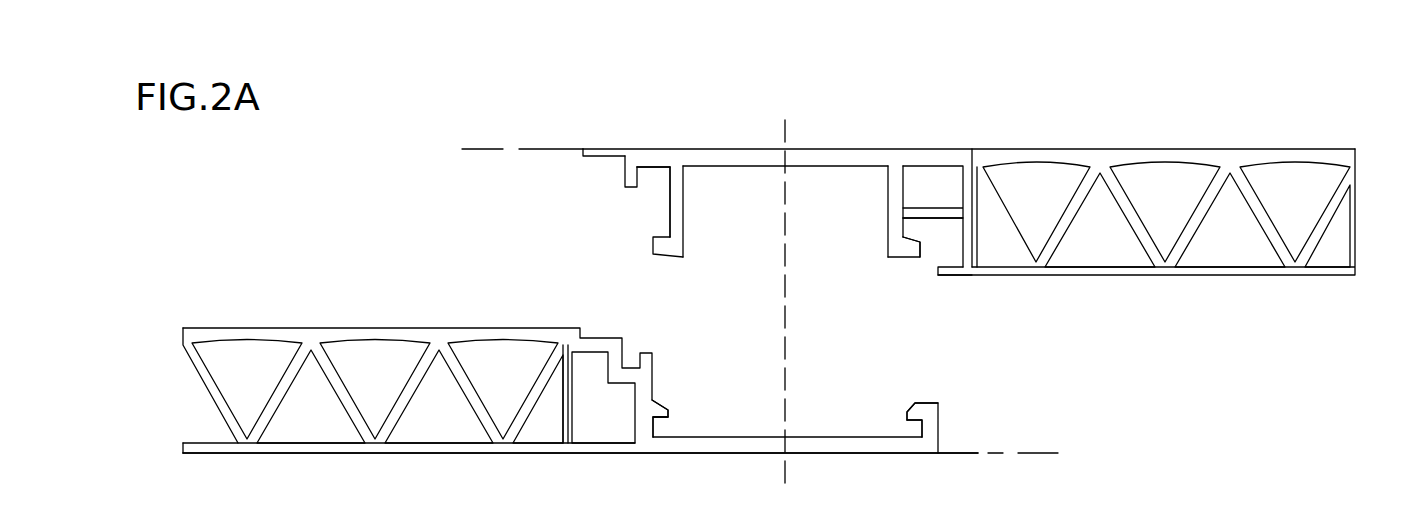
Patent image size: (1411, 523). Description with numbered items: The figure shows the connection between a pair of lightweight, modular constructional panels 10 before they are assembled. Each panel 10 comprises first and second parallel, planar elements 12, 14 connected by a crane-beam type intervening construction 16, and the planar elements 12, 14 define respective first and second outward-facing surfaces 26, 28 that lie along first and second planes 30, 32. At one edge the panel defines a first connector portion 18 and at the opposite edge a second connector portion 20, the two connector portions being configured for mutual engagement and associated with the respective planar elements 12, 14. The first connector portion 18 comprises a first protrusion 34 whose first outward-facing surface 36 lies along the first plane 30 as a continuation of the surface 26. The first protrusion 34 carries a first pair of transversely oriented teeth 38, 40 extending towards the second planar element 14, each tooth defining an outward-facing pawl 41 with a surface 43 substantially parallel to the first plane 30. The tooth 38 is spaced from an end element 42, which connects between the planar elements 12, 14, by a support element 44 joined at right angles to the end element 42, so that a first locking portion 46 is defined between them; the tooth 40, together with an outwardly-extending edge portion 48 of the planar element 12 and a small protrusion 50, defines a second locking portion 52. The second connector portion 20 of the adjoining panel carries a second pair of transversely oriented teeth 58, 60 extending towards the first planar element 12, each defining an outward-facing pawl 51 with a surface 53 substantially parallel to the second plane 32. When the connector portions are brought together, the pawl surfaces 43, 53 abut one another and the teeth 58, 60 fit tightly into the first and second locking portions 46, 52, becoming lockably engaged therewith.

The constructional panel 10 is at (778, 286).
The first planar element 12 is at (778, 302).
The second planar element 14 is at (769, 332).
The intervening construction 16 is at (318, 420).
The first connector portion 18 is at (929, 174).
The second connector portion 20 is at (773, 462).
The first outward-facing surface 26 is at (1244, 142).
The second outward-facing surface 28 is at (1262, 280).
The first plane 30 is at (507, 147).
The second plane 32 is at (1020, 458).
The first protrusion 34 is at (818, 148).
The first outward-facing surface of first protrusion 36 is at (929, 132).
The tooth 38 is at (886, 228).
The tooth 40 is at (685, 233).
The pawl 41 is at (667, 258).
The end element 42 is at (972, 250).
The pawl surface 43 is at (662, 232).
The support element 44 is at (922, 206).
The first locking portion 46 is at (930, 252).
The outwardly-extending edge portion 48 is at (628, 148).
The small protrusion 50 is at (622, 178).
The second locking portion 52 is at (645, 217).
The pawl 51 is at (660, 412).
The pawl surface 53 is at (662, 420).
The tooth 58 is at (940, 437).
The tooth 60 is at (652, 352).